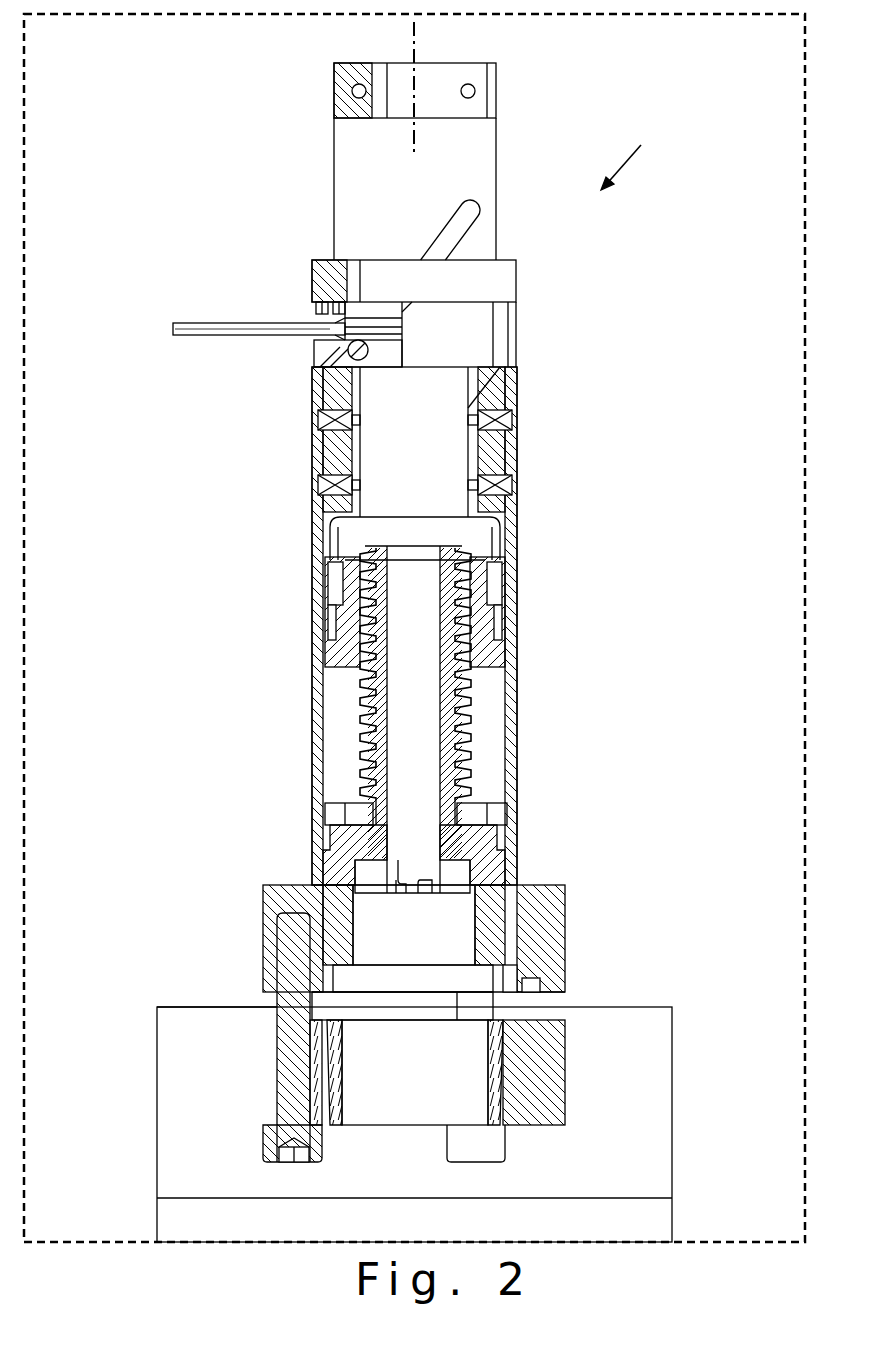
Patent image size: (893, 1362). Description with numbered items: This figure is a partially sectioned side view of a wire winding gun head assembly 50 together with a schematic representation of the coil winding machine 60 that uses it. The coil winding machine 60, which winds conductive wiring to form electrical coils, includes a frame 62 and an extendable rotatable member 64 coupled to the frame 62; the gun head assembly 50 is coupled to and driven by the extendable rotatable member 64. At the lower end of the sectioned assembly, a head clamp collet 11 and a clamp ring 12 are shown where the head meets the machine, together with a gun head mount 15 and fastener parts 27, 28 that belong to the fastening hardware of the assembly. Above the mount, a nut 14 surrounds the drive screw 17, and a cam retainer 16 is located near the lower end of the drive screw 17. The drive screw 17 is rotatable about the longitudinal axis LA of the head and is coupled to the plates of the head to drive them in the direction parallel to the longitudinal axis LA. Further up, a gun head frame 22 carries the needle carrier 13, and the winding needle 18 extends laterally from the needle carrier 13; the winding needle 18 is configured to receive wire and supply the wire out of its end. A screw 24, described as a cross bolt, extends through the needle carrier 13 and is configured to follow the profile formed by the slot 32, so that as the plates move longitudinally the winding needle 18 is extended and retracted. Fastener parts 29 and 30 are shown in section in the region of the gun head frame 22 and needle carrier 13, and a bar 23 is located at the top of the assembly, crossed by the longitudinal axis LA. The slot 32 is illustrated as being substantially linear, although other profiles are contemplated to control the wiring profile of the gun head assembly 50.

The head clamp collet 11 is at (340, 1085).
The clamp ring 12 is at (282, 1042).
The needle carrier 13 is at (320, 352).
The nut 14 is at (330, 655).
The gun head mount 15 is at (320, 955).
The cam retainer 16 is at (335, 817).
The drive screw 17 is at (345, 845).
The winding needle 18 is at (185, 323).
The gun head frame 22 is at (325, 272).
The bar 23 is at (340, 86).
The screw 24 is at (335, 372).
The fastener part 27 is at (540, 940).
The fastener part 28 is at (300, 1090).
The fastener part 29 is at (318, 424).
The fastener part 30 is at (318, 310).
The slot 32 is at (450, 222).
The gun head assembly 50 is at (632, 153).
The coil winding machine 60 is at (805, 335).
The frame 62 is at (672, 1222).
The extendable rotatable member 64 is at (672, 1112).
The longitudinal axis LA is at (414, 47).